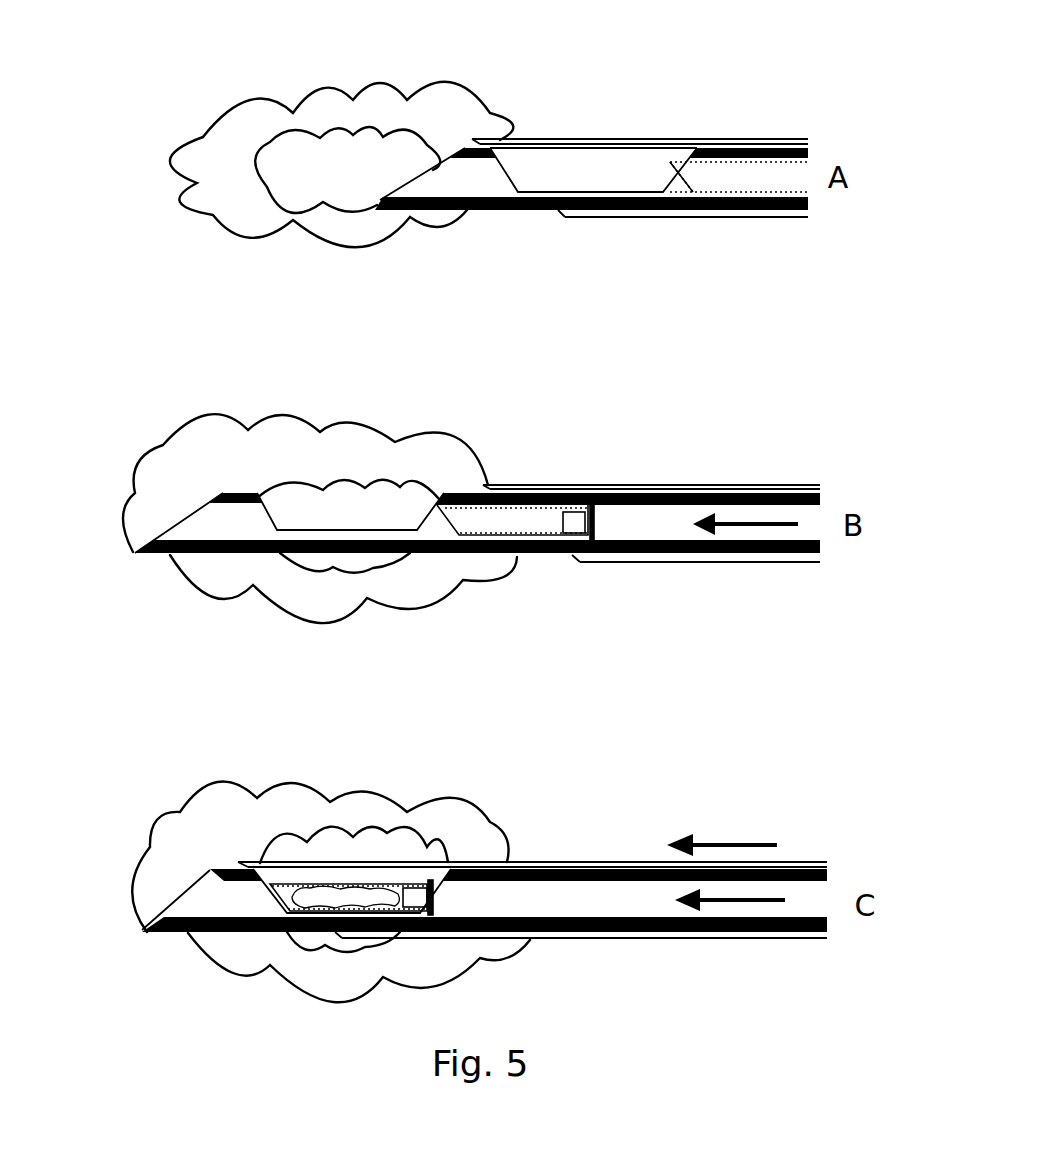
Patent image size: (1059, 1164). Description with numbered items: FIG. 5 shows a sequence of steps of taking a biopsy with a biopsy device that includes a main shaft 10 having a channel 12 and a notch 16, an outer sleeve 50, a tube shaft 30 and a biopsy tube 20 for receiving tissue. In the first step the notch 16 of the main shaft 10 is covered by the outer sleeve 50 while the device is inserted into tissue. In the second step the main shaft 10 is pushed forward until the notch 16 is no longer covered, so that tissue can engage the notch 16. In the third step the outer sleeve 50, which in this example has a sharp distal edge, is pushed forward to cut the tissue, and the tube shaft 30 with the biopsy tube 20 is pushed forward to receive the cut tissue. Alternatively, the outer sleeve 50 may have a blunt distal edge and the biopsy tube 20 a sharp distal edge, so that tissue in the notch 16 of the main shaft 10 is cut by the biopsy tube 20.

The main shaft 10 is at (519, 213).
The channel of main shaft 12 is at (436, 171).
The notch 16 is at (590, 177).
The biopsy tube 20 is at (359, 876).
The tube shaft 30 is at (637, 526).
The outer sleeve 50 is at (663, 134).